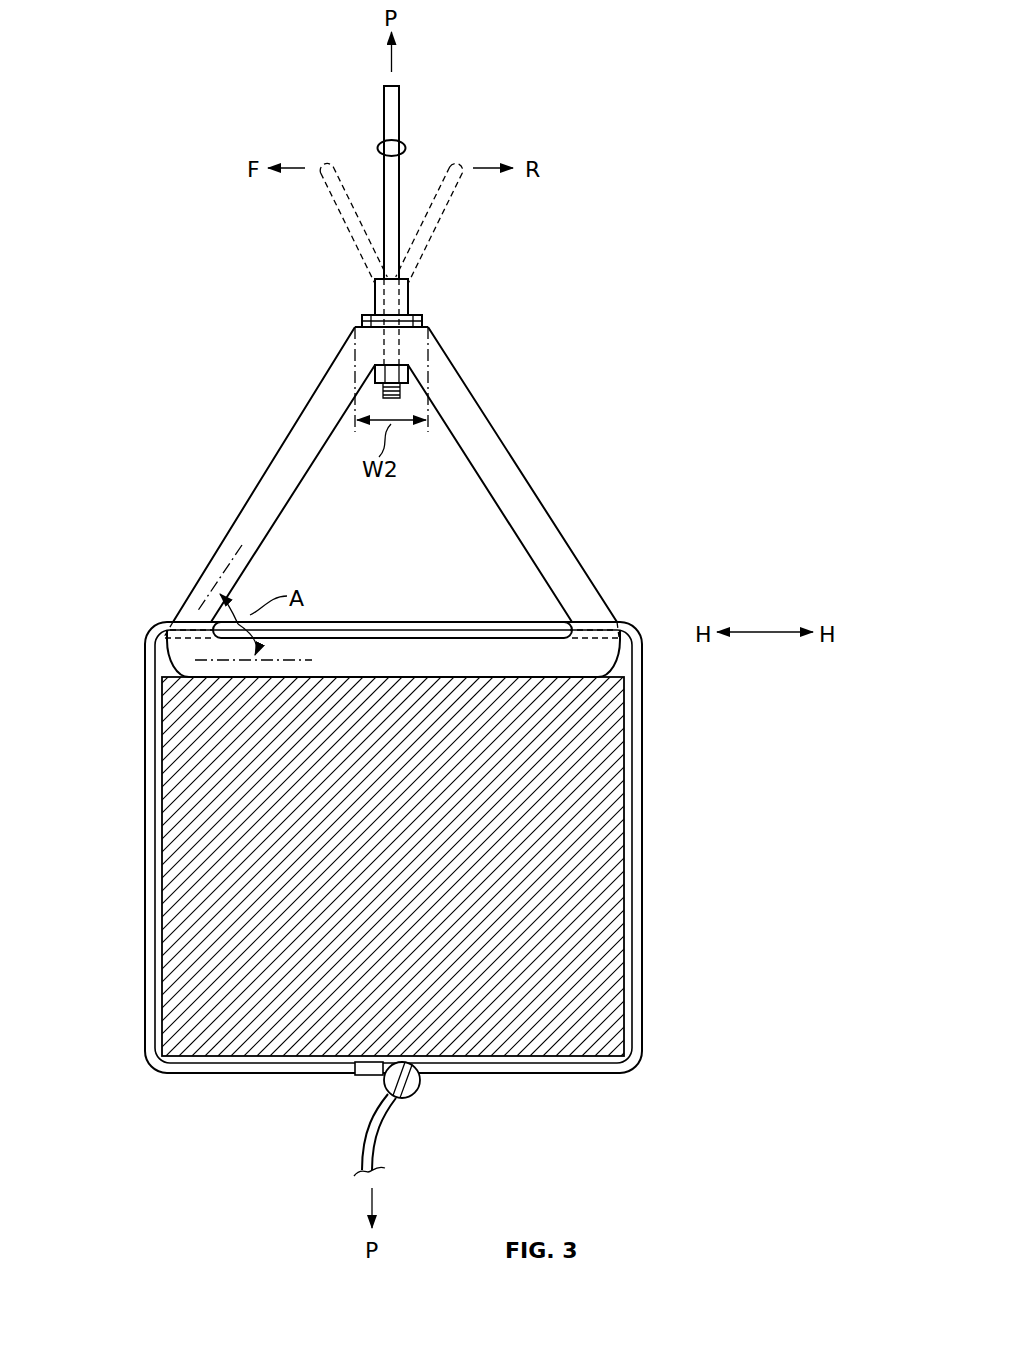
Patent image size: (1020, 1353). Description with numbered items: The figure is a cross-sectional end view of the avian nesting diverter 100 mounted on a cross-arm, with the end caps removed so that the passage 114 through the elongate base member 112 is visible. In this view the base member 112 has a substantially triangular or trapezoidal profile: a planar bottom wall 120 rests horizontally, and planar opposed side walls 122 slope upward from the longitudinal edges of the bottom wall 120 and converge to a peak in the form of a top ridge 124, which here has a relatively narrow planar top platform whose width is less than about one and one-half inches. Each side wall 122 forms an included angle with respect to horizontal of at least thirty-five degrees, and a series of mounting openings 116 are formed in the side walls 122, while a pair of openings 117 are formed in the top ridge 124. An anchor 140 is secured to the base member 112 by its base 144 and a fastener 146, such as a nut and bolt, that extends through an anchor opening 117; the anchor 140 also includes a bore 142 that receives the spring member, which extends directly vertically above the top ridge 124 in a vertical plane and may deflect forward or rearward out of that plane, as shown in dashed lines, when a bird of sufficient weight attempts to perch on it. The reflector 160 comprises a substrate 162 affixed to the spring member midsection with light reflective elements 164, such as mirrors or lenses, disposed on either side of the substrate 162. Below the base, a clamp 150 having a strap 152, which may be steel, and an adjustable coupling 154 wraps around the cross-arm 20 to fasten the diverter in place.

The contents / filter media 20 is at (613, 757).
The avian nesting diverter 100 is at (551, 240).
The base member 112 is at (399, 491).
The passage 114 is at (412, 542).
The mounting openings 116 is at (200, 618).
The openings 117 is at (393, 354).
The bottom wall 120 is at (435, 655).
The side walls 122 is at (300, 437).
The top ridge 124 is at (417, 316).
The anchor 140 is at (377, 290).
The bore 142 is at (392, 297).
The base 144 is at (369, 319).
The fastener 146 is at (402, 392).
The clamp 150 is at (500, 899).
The strap 152 is at (150, 810).
The adjustable coupling 154 is at (410, 1090).
The reflector 160 is at (410, 183).
The substrate 162 is at (390, 110).
The light reflective elements 164 is at (380, 122).